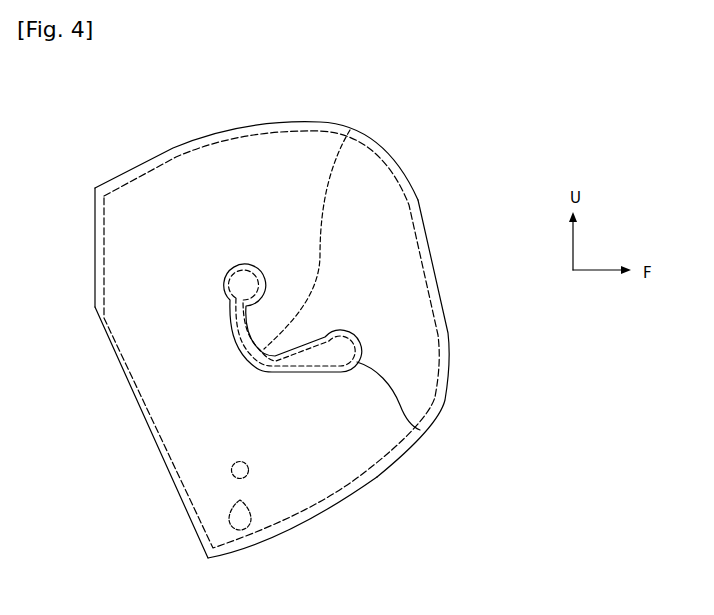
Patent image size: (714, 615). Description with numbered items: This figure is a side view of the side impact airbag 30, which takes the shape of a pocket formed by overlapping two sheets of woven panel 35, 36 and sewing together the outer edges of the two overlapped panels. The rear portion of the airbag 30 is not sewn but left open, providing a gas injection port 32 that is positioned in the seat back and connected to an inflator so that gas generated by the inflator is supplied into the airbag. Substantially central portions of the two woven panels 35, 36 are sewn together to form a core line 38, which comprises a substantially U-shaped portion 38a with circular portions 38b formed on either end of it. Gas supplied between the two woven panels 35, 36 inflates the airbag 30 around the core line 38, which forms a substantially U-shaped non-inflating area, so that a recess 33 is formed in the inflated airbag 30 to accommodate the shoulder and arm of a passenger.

The airbag 30 is at (268, 316).
The gas injection port 32 is at (187, 510).
The recess 33 is at (216, 358).
The woven panel 35 is at (173, 148).
The woven panel 36 is at (160, 248).
The core line 38 is at (364, 326).
The U-shaped portion 38a is at (352, 143).
The circular portion 38b is at (431, 409).